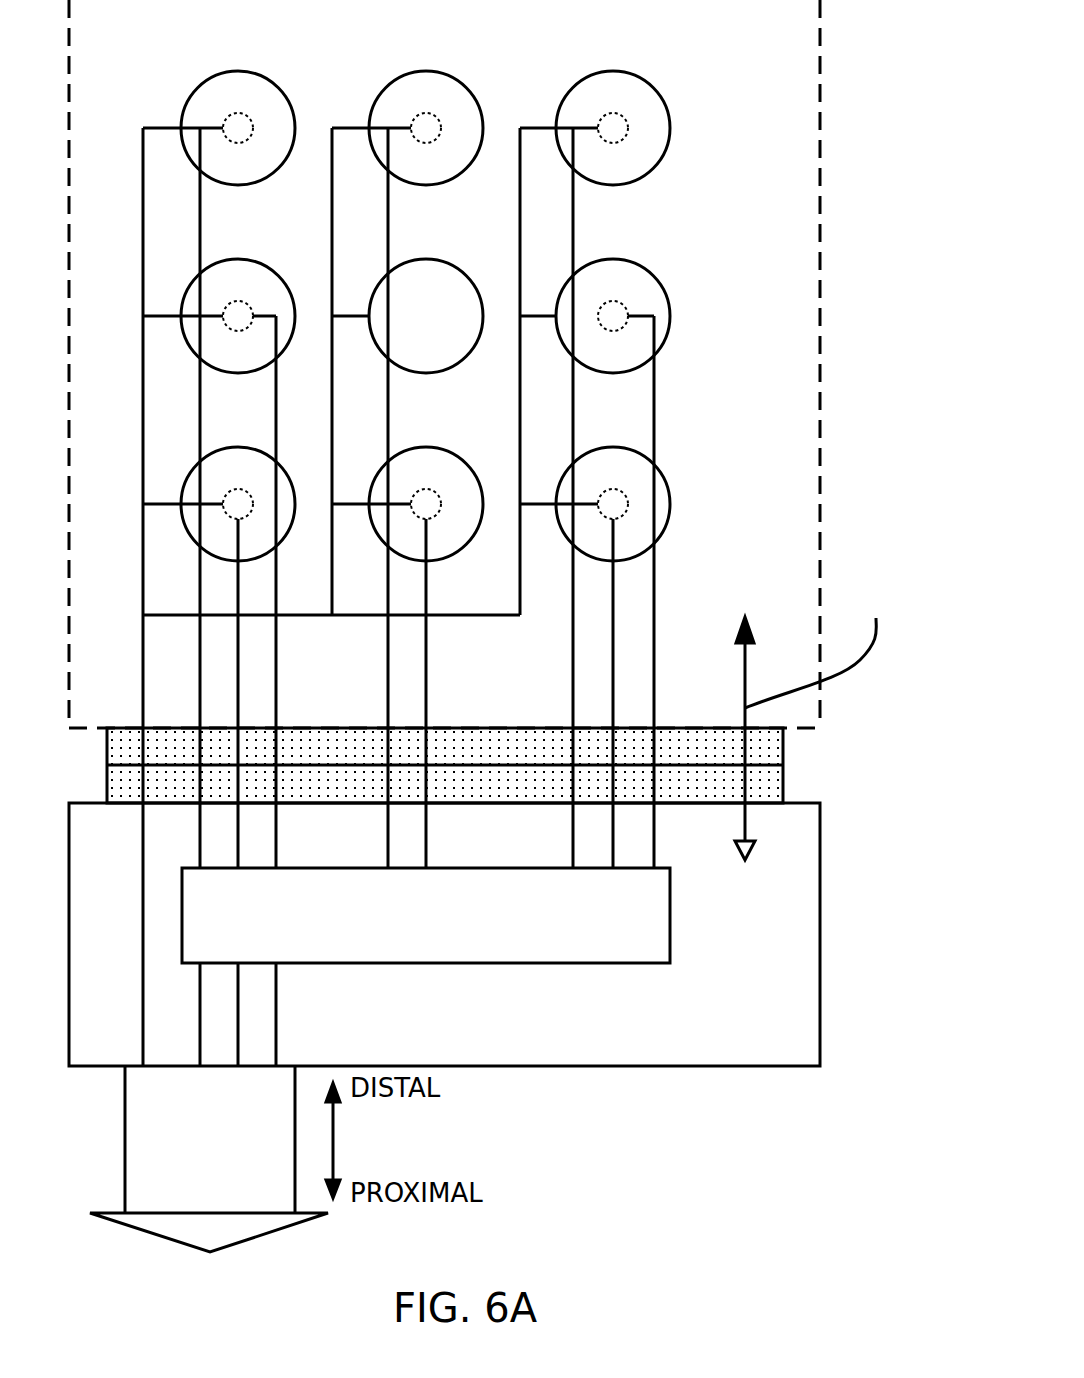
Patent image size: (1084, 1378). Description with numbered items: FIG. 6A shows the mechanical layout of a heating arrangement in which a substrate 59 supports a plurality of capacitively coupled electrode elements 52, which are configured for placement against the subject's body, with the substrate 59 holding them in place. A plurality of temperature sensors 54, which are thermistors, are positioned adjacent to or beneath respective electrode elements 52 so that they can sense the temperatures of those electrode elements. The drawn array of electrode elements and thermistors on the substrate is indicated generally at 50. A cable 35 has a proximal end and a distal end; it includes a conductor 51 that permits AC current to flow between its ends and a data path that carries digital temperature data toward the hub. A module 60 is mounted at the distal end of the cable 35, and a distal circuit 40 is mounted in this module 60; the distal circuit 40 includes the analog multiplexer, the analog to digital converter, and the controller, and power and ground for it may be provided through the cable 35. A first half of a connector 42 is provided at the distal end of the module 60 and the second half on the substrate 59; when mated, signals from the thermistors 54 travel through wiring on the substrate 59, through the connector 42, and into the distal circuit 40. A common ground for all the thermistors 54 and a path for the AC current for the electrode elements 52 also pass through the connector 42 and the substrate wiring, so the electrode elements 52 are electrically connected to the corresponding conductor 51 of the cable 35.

The cable 35 is at (125, 1145).
The distal circuit 40 is at (670, 948).
The connector 42 is at (866, 765).
The thermistor array 50 is at (697, 202).
The conductor 51 is at (143, 853).
The electrode element 52 is at (295, 128).
The temperature sensor 54 is at (253, 120).
The substrate 59 is at (820, 235).
The module 60 is at (820, 890).